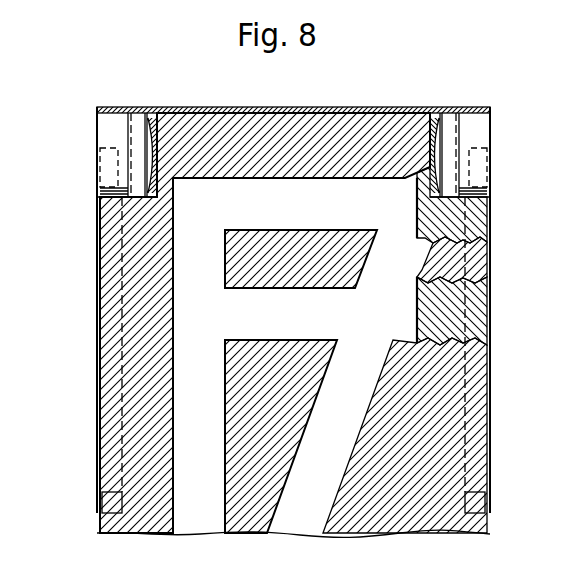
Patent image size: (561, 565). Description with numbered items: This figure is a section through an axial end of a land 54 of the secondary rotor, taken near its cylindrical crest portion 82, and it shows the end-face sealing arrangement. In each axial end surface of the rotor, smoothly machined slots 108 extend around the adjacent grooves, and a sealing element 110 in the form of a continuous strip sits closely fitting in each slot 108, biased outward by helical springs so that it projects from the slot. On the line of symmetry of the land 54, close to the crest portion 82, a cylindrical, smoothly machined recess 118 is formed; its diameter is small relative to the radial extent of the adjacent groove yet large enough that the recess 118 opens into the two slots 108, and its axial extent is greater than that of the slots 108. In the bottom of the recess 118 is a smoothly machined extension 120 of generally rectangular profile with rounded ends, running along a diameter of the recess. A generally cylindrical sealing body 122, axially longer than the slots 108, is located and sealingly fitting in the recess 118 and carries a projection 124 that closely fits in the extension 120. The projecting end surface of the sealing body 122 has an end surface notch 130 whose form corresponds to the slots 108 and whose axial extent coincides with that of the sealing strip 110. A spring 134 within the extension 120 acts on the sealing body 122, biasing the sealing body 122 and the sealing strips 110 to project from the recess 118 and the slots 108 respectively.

The land 54 is at (381, 124).
The crest portion 82 is at (331, 108).
The slot 108 is at (112, 300).
The sealing element 110 is at (97, 246).
The recess 118 is at (132, 117).
The extension 120 is at (157, 123).
The sealing body 122 is at (100, 125).
The projection 124 is at (140, 118).
The end surface notch 130 is at (112, 183).
The spring 134 is at (160, 140).